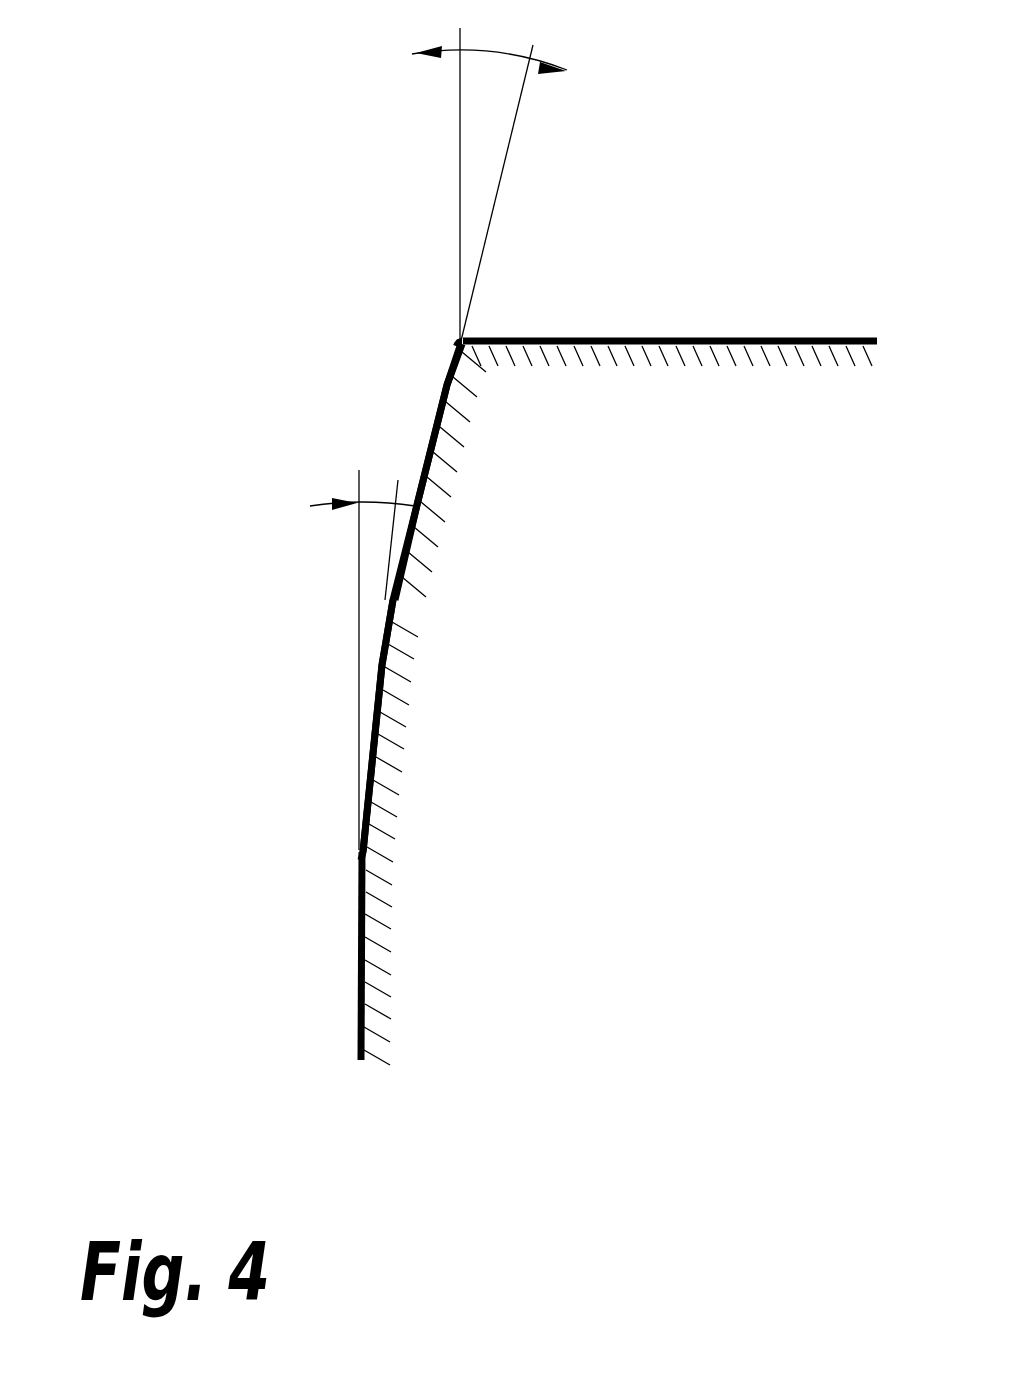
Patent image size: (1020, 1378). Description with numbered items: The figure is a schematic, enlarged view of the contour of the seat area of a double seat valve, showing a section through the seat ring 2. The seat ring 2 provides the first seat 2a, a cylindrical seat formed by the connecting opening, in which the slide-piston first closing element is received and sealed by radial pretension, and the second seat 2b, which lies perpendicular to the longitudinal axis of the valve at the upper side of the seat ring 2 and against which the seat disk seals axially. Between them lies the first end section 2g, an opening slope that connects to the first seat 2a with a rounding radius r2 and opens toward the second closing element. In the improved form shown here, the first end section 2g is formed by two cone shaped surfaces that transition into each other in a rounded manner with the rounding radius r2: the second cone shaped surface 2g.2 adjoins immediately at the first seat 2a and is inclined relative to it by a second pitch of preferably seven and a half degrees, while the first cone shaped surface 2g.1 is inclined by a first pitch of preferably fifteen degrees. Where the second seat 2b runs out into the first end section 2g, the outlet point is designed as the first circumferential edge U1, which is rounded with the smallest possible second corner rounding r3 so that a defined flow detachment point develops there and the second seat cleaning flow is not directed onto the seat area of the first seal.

The seat ring 2 is at (618, 705).
The first seat 2a is at (360, 987).
The second seat 2b is at (651, 335).
The first end section 2g is at (335, 560).
The first cone shaped surface 2g.1 is at (447, 385).
The second cone shaped surface 2g.2 is at (382, 665).
The first circumferential edge U1 is at (458, 340).
The rounding radius r2 is at (570, 630).
The second corner rounding r3 is at (478, 368).